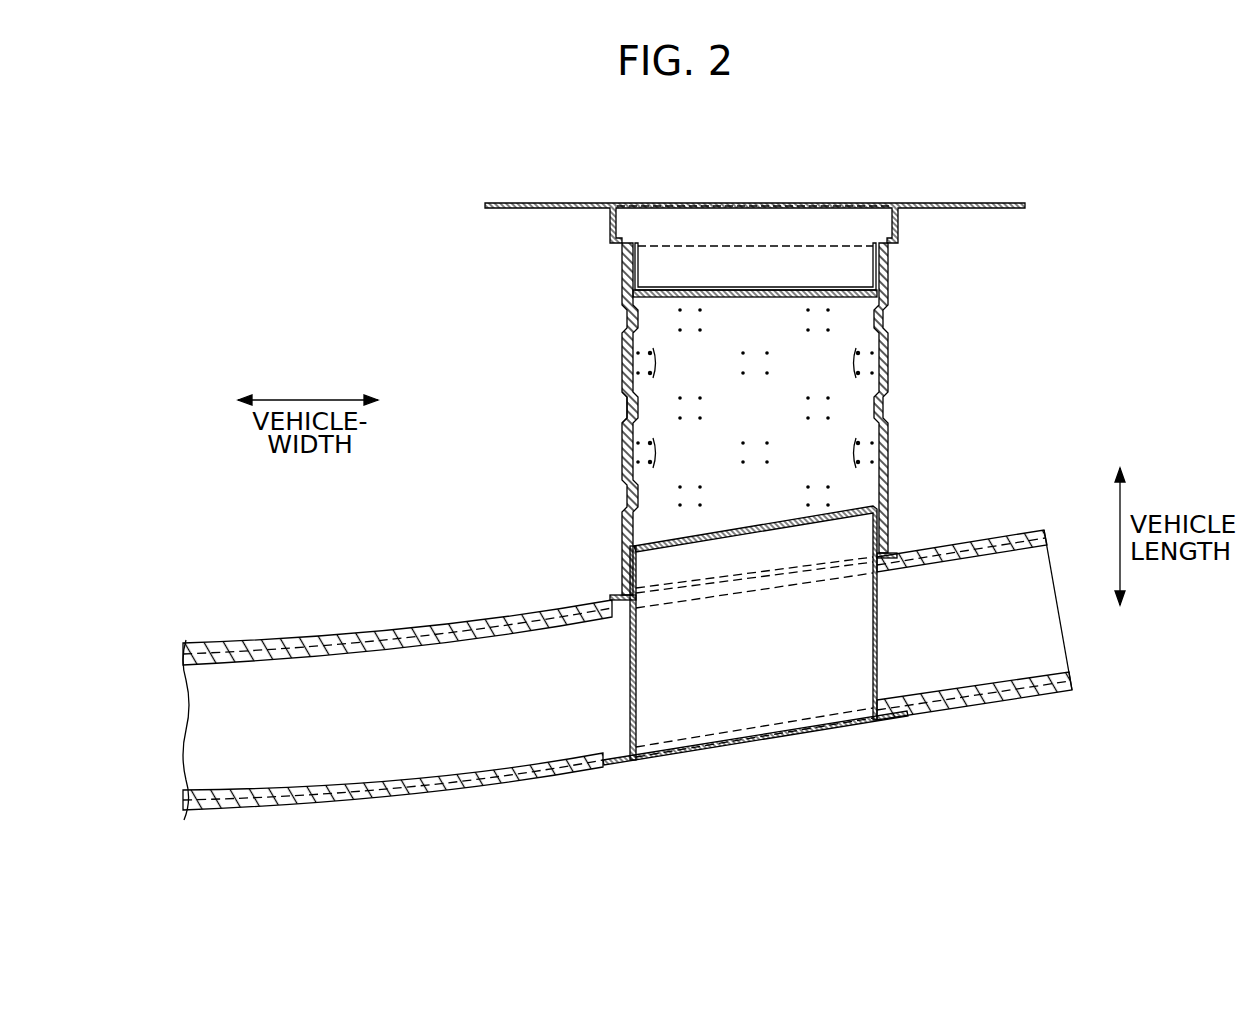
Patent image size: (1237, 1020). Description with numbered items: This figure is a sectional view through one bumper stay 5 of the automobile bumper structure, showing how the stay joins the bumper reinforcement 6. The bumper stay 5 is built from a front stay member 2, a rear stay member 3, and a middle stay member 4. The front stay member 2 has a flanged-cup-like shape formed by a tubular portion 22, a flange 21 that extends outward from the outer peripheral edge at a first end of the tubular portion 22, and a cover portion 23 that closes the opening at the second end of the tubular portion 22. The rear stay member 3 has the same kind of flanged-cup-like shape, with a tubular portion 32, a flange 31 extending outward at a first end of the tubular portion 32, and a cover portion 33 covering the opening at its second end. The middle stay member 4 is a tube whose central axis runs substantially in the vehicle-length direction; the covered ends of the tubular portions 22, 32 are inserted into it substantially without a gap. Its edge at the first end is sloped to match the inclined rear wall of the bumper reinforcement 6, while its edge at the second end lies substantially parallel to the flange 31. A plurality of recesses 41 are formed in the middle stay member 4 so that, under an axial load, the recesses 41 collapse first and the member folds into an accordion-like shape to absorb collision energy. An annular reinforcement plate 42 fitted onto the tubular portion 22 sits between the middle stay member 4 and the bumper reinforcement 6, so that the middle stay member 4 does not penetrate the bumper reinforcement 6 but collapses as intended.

The front stay member 2 is at (692, 856).
The flange 21 is at (618, 767).
The tubular portion 22 is at (632, 668).
The cover portion 23 is at (727, 533).
The rear stay member 3 is at (943, 124).
The flange 31 is at (940, 202).
The tubular portion 32 is at (872, 268).
The cover portion 33 is at (803, 293).
The middle stay member 4 is at (888, 362).
The recesses 41 is at (622, 403).
The reinforcement plate 42 is at (610, 597).
The bumper stay 5 is at (1032, 122).
The bumper reinforcement 6 is at (327, 805).